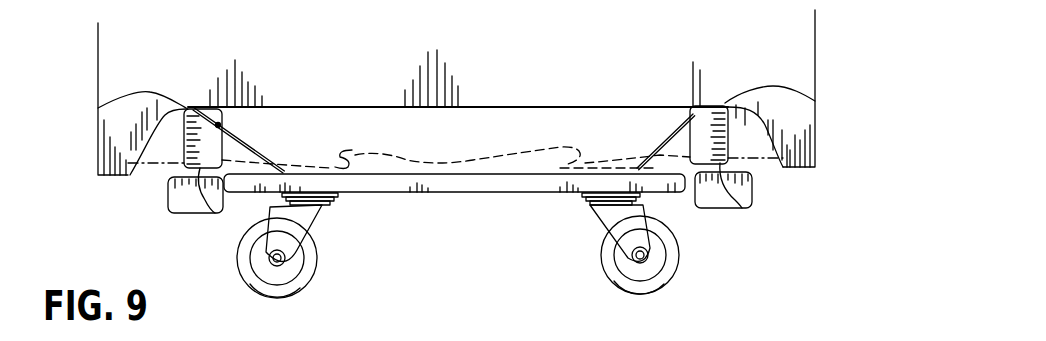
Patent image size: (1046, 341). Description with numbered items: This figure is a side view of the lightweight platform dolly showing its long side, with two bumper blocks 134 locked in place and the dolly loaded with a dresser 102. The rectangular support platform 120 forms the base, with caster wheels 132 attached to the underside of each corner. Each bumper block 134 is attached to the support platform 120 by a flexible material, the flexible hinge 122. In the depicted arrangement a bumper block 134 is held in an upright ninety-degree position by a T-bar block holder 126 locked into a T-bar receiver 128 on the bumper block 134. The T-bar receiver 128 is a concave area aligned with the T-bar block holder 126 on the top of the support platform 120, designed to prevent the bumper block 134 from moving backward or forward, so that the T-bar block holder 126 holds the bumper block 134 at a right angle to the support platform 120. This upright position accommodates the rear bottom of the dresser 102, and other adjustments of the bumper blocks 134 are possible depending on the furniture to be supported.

The dresser 102 is at (793, 33).
The support platform 120 is at (450, 180).
The flexible hinge 122 is at (255, 152).
The T-bar block holder 126 is at (230, 170).
The T-bar receiver 128 is at (98, 110).
The caster wheels 132 is at (238, 250).
The bumper block 134 is at (175, 175).